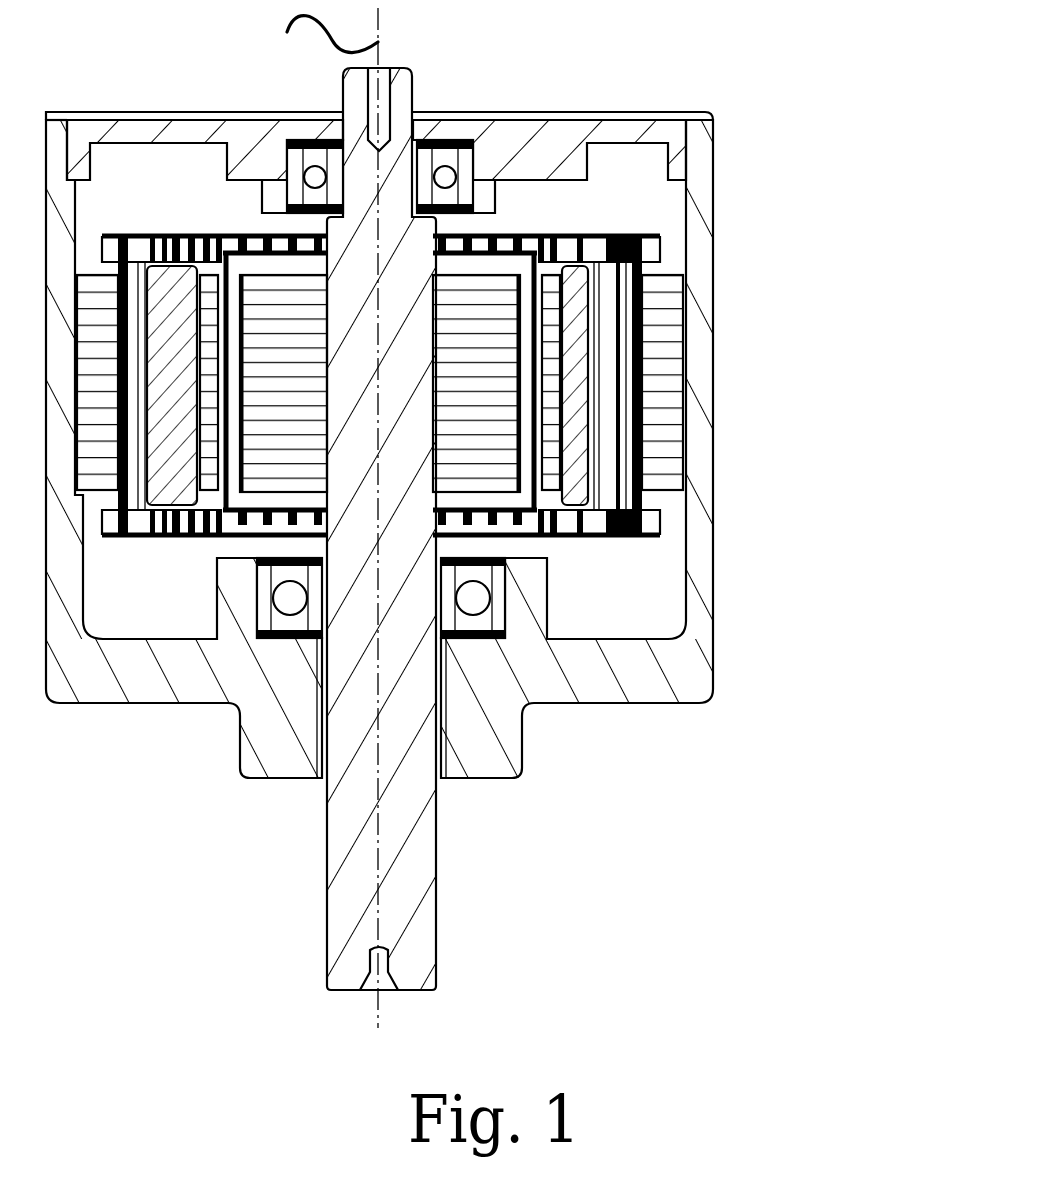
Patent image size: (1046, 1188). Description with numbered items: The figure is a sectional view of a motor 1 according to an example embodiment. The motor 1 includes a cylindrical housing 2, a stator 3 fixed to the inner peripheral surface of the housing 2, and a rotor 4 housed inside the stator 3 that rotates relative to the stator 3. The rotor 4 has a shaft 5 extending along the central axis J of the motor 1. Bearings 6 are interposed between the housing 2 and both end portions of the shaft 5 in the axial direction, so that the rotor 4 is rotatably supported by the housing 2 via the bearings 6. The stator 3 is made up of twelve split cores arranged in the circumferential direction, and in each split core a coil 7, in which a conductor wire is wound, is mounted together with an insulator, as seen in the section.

The motor 1 is at (768, 185).
The housing 2 is at (692, 617).
The stator 3 is at (621, 230).
The rotor 4 is at (503, 273).
The shaft 5 is at (418, 957).
The bearings 6 is at (290, 182).
The coil 7 is at (630, 378).